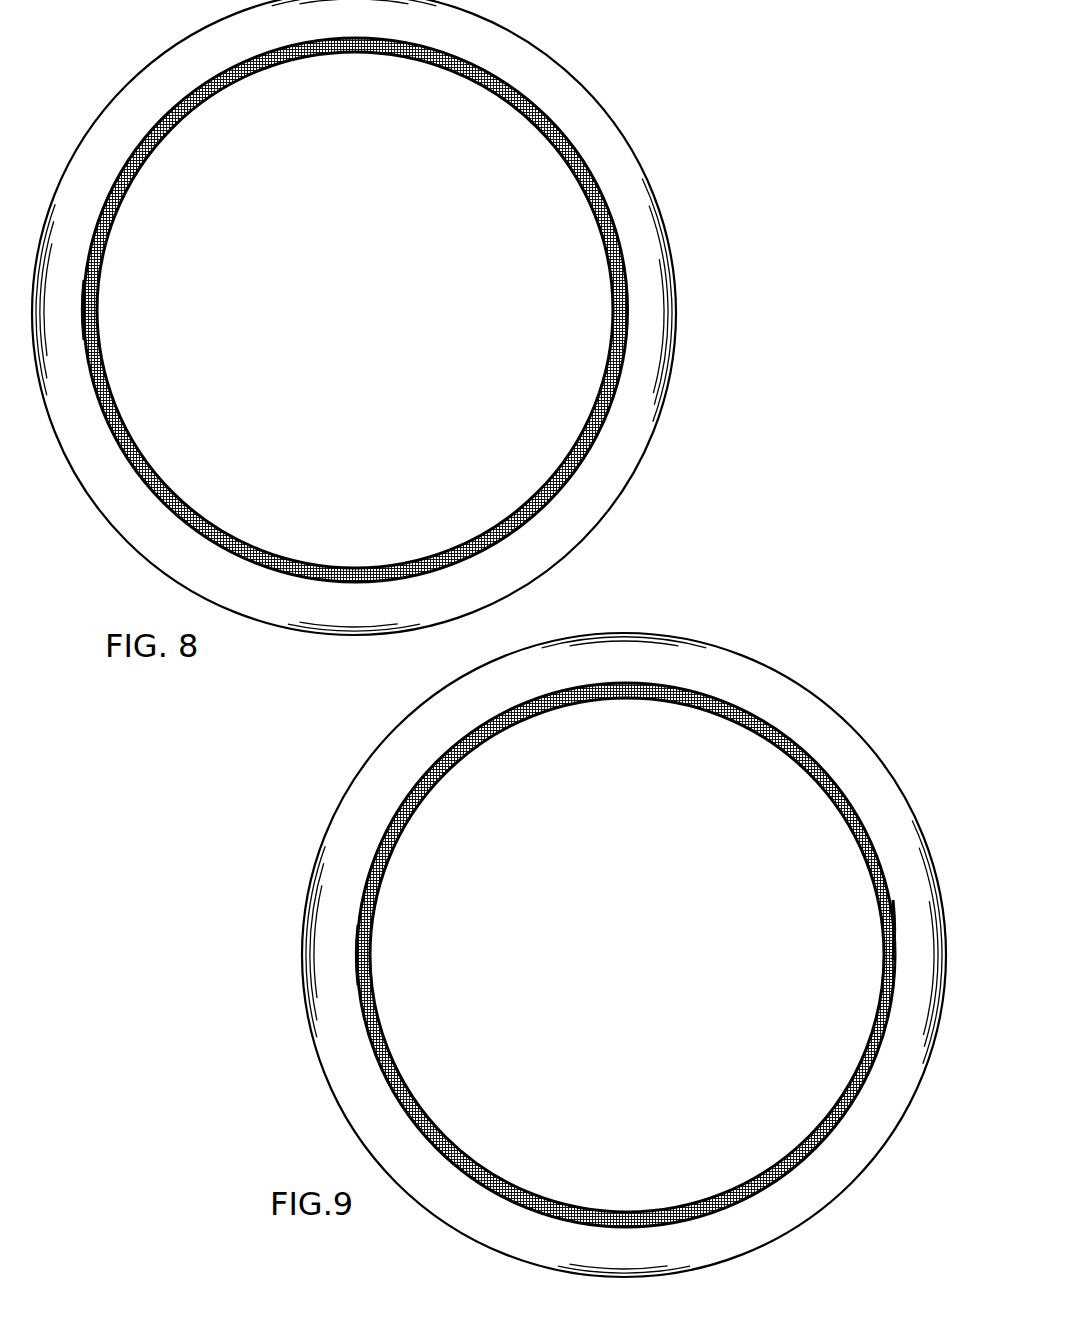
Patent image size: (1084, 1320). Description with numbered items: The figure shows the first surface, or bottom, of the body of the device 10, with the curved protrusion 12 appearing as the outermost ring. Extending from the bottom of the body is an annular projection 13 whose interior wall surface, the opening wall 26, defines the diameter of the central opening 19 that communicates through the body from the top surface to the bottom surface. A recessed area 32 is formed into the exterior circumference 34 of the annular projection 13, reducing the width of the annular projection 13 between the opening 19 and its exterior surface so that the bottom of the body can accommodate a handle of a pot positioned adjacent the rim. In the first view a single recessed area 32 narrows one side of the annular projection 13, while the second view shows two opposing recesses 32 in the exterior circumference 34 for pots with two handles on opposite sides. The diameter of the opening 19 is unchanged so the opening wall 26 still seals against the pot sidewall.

In FIG. 8, the device 10 is at (665, 155).
In FIG. 9, the device 10 is at (712, 628).
In FIG. 8, the curved protrusion 12 is at (620, 443).
In FIG. 9, the curved protrusion 12 is at (388, 765).
In FIG. 8, the annular projection 13 is at (546, 132).
In FIG. 9, the annular projection 13 is at (490, 725).
In FIG. 8, the opening 19 is at (348, 328).
In FIG. 9, the opening 19 is at (622, 958).
In FIG. 8, the opening wall 26 is at (232, 85).
In FIG. 9, the opening wall 26 is at (777, 748).
In FIG. 8, the recessed area 32 is at (83, 310).
In FIG. 9, the recessed area 32 is at (360, 958).
In FIG. 8, the exterior circumference 34 is at (588, 172).
In FIG. 9, the exterior circumference 34 is at (812, 748).